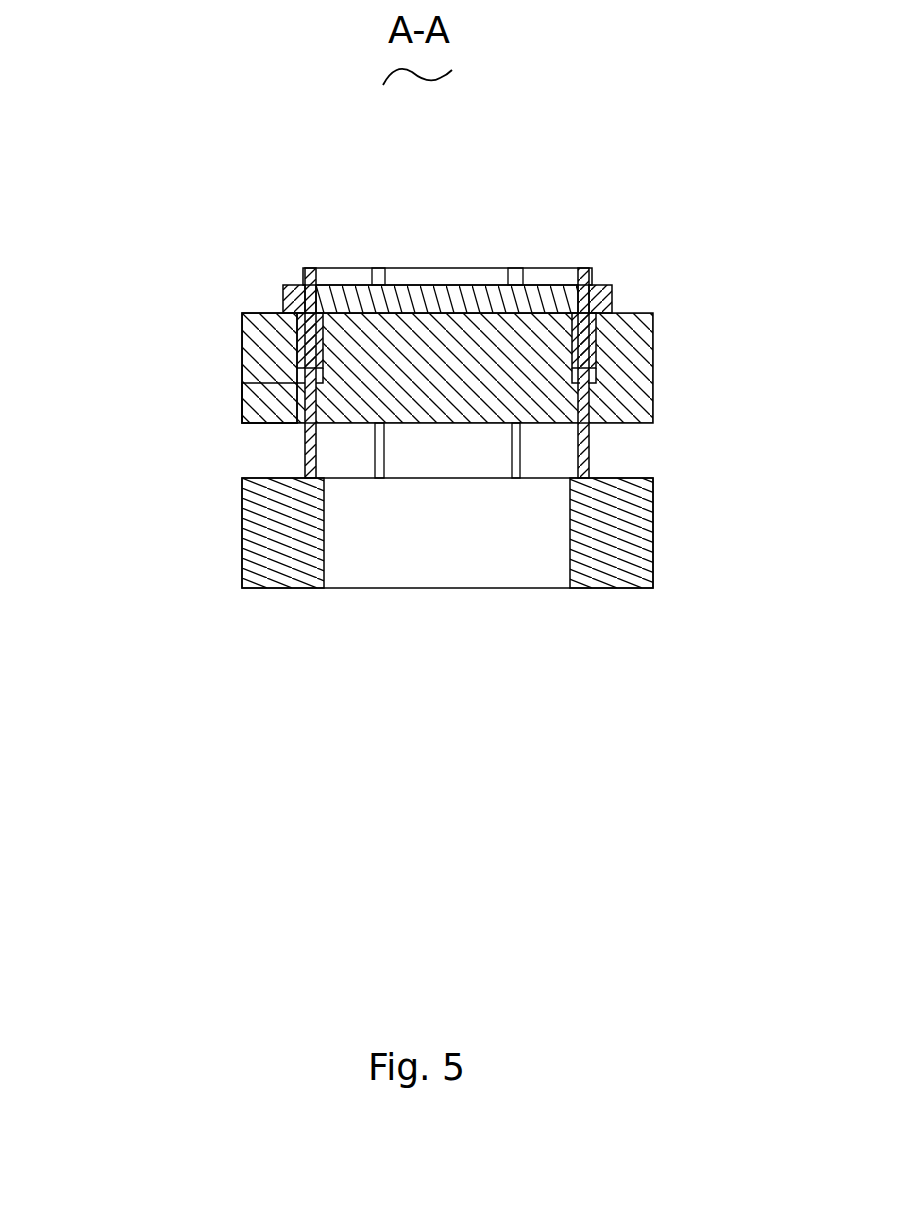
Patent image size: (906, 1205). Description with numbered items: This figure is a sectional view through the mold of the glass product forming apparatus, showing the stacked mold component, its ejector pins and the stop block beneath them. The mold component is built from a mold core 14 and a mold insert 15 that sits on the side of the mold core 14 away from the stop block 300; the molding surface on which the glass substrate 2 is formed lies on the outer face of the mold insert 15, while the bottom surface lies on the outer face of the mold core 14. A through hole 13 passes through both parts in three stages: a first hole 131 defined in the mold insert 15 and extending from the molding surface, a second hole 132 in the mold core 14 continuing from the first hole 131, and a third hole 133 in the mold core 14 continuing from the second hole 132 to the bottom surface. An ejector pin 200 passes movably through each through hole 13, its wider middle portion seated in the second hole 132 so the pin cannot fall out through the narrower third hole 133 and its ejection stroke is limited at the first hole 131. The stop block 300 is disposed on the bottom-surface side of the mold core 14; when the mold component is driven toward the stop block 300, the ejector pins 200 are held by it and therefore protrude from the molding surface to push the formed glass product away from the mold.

The glass substrate 2 is at (590, 265).
The through hole 13 is at (112, 268).
The first hole 131 is at (310, 298).
The second hole 132 is at (298, 377).
The third hole 133 is at (300, 402).
The mold core 14 is at (623, 377).
The mold insert 15 is at (603, 305).
The ejector pins 200 is at (590, 450).
The stop block 300 is at (598, 565).